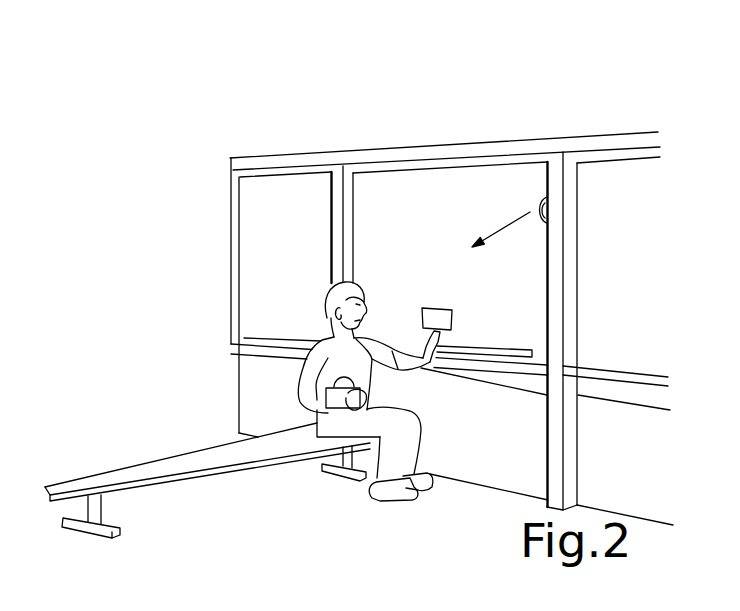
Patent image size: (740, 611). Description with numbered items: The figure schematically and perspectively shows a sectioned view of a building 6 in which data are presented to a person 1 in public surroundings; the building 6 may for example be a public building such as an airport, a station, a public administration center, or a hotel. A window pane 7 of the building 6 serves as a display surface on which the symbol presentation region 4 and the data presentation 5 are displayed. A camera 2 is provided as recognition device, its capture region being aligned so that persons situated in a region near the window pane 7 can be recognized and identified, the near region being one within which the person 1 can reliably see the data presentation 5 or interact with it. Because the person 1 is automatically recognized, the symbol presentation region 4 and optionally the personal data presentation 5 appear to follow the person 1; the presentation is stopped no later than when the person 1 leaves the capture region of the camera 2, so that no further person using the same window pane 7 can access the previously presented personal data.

The person 1 is at (320, 341).
The camera 2 is at (542, 203).
The symbol presentation region 4 is at (503, 346).
The data presentation 5 is at (453, 315).
The building 6 is at (557, 145).
The window pane 7 is at (402, 178).